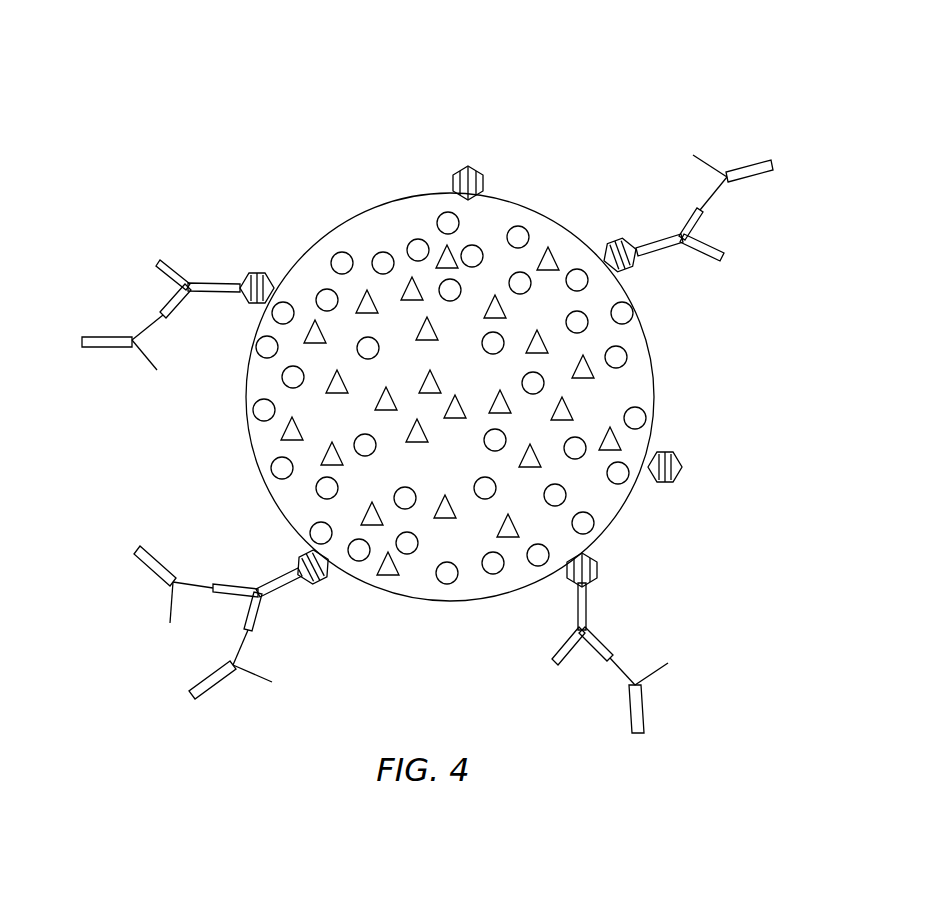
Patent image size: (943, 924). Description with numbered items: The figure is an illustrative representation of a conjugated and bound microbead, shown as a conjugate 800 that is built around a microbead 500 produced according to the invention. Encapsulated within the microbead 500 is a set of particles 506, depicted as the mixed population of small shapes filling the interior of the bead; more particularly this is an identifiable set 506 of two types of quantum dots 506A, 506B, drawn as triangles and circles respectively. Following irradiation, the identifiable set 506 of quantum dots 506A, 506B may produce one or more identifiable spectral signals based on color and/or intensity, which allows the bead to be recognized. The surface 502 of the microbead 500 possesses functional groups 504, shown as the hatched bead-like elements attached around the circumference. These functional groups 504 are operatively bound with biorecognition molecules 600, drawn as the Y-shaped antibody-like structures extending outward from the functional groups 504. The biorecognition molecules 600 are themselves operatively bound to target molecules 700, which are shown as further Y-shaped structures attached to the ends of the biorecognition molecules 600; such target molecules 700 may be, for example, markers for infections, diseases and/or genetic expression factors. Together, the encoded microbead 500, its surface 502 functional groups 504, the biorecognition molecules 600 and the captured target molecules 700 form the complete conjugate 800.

The conjugate 800 is at (418, 383).
The microbead 500 is at (312, 273).
The surface 502 is at (247, 447).
The functional groups 504 is at (612, 243).
The set of particles 506 is at (312, 77).
The quantum dots 506A is at (447, 258).
The quantum dots 506B is at (376, 255).
The biorecognition molecules 600 is at (663, 237).
The target molecules 700 is at (768, 162).